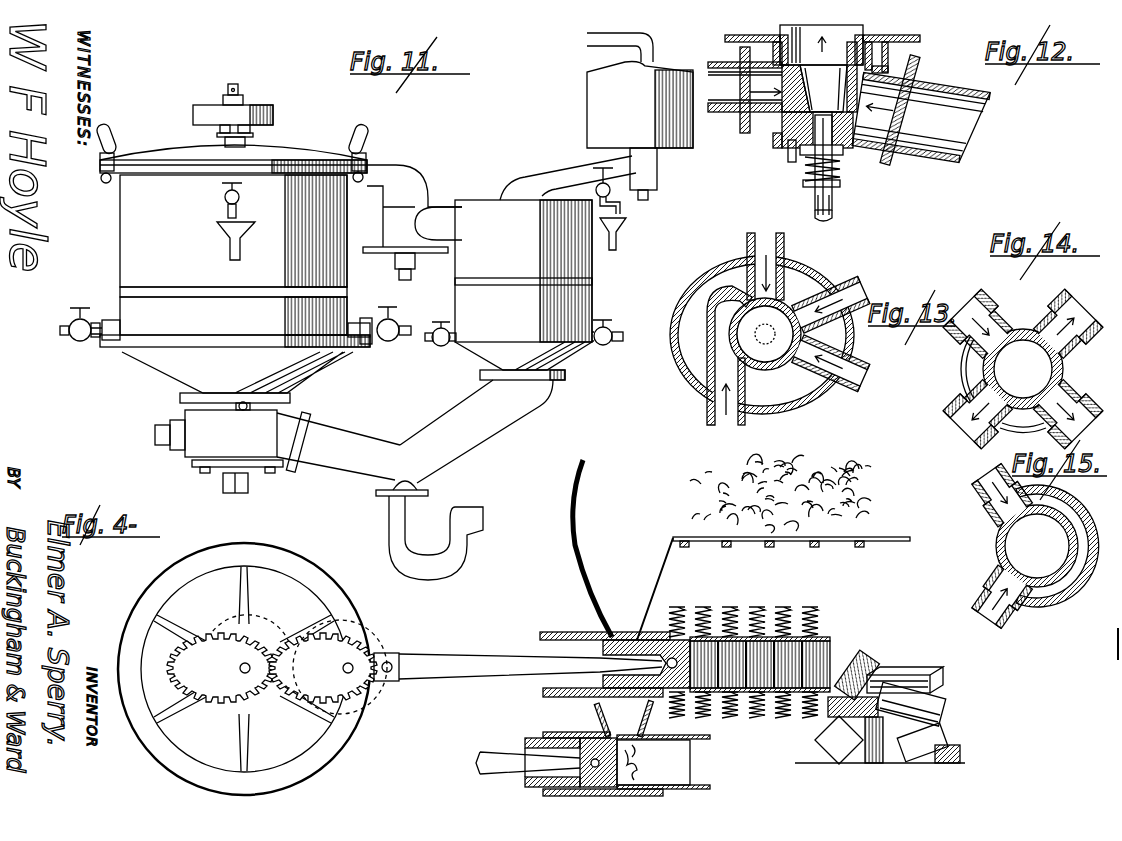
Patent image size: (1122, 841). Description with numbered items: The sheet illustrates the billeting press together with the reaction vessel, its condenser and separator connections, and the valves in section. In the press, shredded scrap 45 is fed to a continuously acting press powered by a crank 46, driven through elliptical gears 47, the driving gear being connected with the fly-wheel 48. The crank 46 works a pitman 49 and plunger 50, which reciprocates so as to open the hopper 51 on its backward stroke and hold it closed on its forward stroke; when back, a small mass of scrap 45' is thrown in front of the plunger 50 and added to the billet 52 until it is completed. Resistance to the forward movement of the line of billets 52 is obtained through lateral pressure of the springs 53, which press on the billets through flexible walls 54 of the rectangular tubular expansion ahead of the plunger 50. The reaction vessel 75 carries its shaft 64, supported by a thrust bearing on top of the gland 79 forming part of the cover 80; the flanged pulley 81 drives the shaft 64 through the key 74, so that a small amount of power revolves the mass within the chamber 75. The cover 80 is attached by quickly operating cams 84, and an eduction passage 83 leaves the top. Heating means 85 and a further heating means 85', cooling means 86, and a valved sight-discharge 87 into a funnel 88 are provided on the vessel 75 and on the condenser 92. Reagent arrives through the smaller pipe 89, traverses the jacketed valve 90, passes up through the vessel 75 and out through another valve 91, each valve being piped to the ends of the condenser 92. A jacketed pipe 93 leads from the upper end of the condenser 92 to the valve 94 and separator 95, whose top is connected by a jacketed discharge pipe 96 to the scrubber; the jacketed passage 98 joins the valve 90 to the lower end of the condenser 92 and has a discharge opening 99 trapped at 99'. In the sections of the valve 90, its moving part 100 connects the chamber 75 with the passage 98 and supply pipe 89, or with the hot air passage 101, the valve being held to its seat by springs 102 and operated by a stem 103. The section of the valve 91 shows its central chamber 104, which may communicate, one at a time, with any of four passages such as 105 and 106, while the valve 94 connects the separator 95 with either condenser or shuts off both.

In FIG. 4, the shredded scrap 45 is at (768, 493).
In FIG. 4, the small mass of scrap 45' is at (593, 765).
In FIG. 4, the crank 46 is at (392, 656).
In FIG. 4, the elliptical gears 47 is at (277, 667).
In FIG. 4, the fly-wheel 48 is at (305, 577).
In FIG. 4, the pitman 49 is at (530, 650).
In FIG. 4, the plunger 50 is at (668, 641).
In FIG. 4, the hopper 51 is at (741, 598).
In FIG. 4, the billet 52 is at (718, 640).
In FIG. 4, the springs 53 is at (822, 614).
In FIG. 4, the flexible walls 54 is at (790, 692).
In FIG. 11, the shaft 64 is at (228, 89).
In FIG. 11, the key 74 is at (240, 96).
In FIG. 11, the reaction vessel 75 is at (235, 274).
In FIG. 11, the gland 79 is at (224, 142).
In FIG. 11, the cover 80 is at (233, 140).
In FIG. 11, the flanged pulley 81 is at (260, 104).
In FIG. 11, the eduction passage 83 is at (366, 178).
In FIG. 11, the cams 84 is at (111, 130).
In FIG. 11, the heating means 85 is at (439, 349).
In FIG. 11, the valve 85' is at (379, 341).
In FIG. 11, the cooling means 86 is at (60, 338).
In FIG. 11, the valved sight-discharge 87 is at (241, 196).
In FIG. 11, the funnel 88 is at (254, 234).
In FIG. 11, the chlorin supply pipe 89 is at (151, 440).
In FIG. 12, the chlorin supply pipe 89 is at (745, 90).
In FIG. 13, the chlorin supply pipe 89 is at (724, 426).
In FIG. 11, the jacketed valve 90 is at (234, 437).
In FIG. 12, the jacketed valve 90 is at (801, 106).
In FIG. 13, the jacketed valve 90 is at (762, 343).
In FIG. 11, the valve 91 is at (412, 243).
In FIG. 14, the valve 91 is at (1075, 362).
In FIG. 11, the condenser 92 is at (523, 290).
In FIG. 11, the pipe 93 is at (554, 180).
In FIG. 15, the pipe 93 is at (966, 553).
In FIG. 11, the valve 94 is at (658, 170).
In FIG. 15, the valve 94 is at (1047, 546).
In FIG. 11, the separator 95 is at (640, 105).
In FIG. 11, the jacketed discharge pipe 96 is at (587, 42).
In FIG. 12, the jacketed discharge pipe 96 is at (921, 110).
In FIG. 11, the passage 98 is at (415, 431).
In FIG. 13, the passage 98 is at (864, 286).
In FIG. 11, the discharge opening 99 is at (425, 485).
In FIG. 11, the trap 99' is at (436, 538).
In FIG. 12, the moving part of the valve 100 is at (825, 88).
In FIG. 13, the moving part of the valve 100 is at (765, 334).
In FIG. 12, the hot air passage 101 is at (790, 170).
In FIG. 12, the springs 102 is at (803, 182).
In FIG. 11, the stem 103 is at (249, 488).
In FIG. 12, the stem 103 is at (832, 203).
In FIG. 14, the passage 104 is at (1012, 379).
In FIG. 14, the branch 105 is at (975, 436).
In FIG. 14, the branch 106 is at (992, 320).